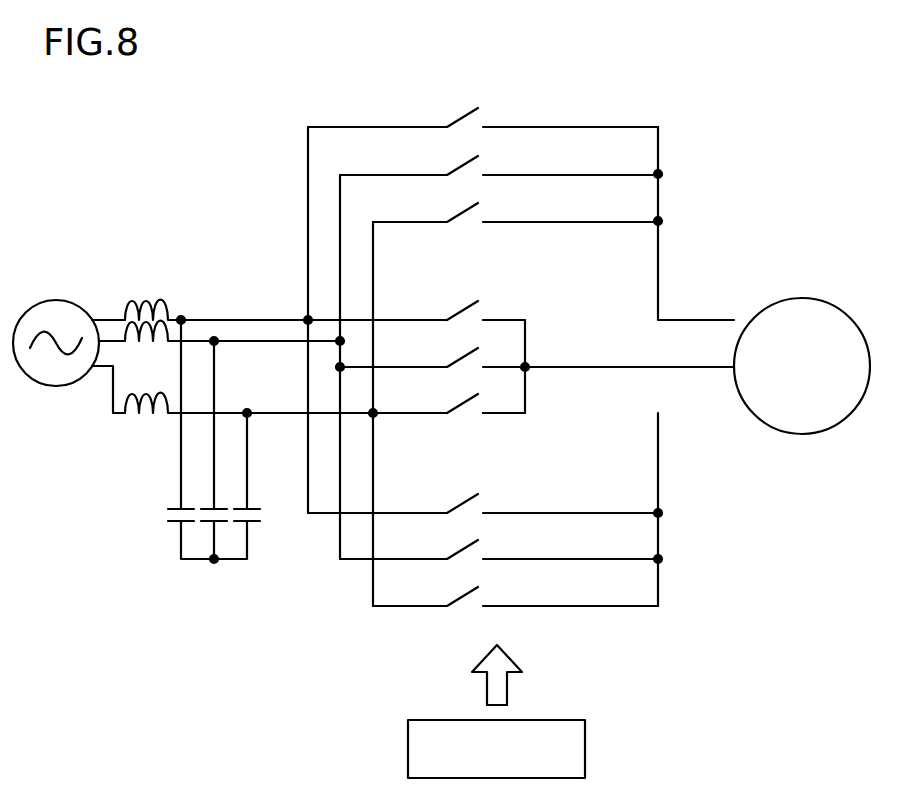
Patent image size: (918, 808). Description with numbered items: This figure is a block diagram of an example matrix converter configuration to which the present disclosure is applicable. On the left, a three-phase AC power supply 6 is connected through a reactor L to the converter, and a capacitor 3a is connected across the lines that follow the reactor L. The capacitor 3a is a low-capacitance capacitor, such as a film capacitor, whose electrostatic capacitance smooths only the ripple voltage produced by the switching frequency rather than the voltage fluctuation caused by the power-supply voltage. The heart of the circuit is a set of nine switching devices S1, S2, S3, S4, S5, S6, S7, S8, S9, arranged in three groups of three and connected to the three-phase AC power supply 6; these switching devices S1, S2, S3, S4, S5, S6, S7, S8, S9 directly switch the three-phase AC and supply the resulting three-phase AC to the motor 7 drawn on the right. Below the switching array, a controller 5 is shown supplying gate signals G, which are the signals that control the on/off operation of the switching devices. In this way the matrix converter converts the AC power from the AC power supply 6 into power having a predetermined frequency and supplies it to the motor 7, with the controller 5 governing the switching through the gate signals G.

The AC power supply 6 is at (54, 299).
The reactor L is at (169, 339).
The capacitor 3a is at (175, 522).
The switching device S1 is at (466, 114).
The switching device S2 is at (466, 162).
The switching device S3 is at (466, 209).
The switching device S4 is at (466, 307).
The switching device S5 is at (466, 354).
The switching device S6 is at (466, 400).
The switching device S7 is at (466, 500).
The switching device S8 is at (466, 546).
The switching device S9 is at (466, 593).
The motor 7 is at (807, 298).
The gate signals G is at (505, 675).
The controller 5 is at (585, 747).